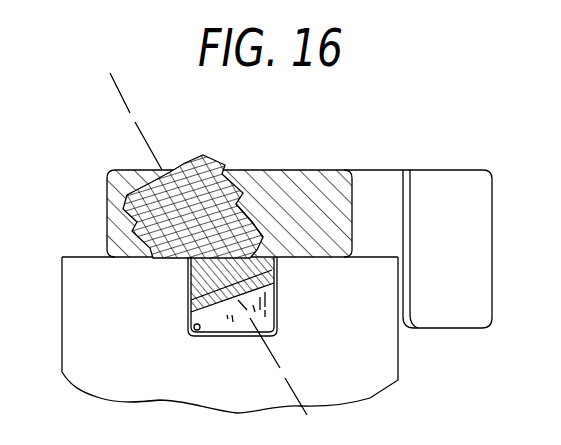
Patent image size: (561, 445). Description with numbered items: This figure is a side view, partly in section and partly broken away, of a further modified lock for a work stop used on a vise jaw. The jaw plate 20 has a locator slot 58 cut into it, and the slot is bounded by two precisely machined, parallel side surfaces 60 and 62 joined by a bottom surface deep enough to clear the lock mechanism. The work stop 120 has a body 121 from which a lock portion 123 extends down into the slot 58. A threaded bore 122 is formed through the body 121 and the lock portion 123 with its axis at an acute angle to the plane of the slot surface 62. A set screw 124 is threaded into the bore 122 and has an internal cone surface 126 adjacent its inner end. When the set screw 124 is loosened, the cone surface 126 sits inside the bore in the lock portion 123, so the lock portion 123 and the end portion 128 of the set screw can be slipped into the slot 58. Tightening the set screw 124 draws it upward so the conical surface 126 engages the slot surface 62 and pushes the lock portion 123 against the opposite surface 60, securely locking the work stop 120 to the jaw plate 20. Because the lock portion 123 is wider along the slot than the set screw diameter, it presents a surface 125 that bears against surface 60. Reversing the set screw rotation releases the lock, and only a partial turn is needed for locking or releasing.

The jaw plate 20 is at (378, 363).
The locator slot 58 is at (281, 369).
The slot side surface 60 is at (273, 285).
The slot side surface 62 is at (198, 337).
The work stop 120 is at (328, 182).
The body 121 is at (287, 182).
The threaded bore 122 is at (243, 212).
The lock portion 123 is at (222, 325).
The set screw 124 is at (187, 190).
The lock portion surface 125 is at (280, 315).
The internal cone surface 126 is at (188, 282).
The set screw end portion 128 is at (268, 292).